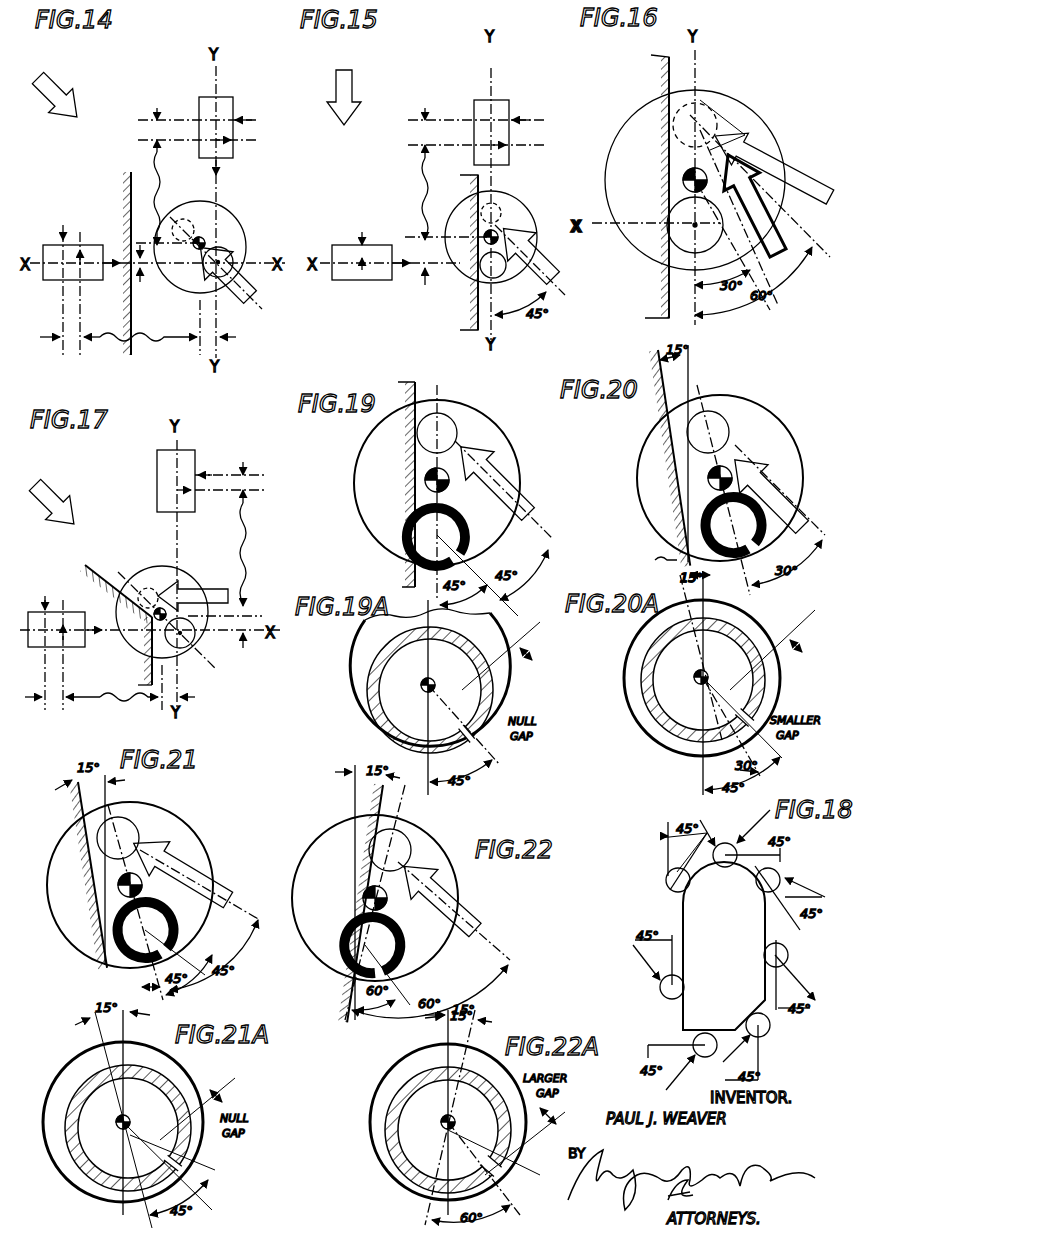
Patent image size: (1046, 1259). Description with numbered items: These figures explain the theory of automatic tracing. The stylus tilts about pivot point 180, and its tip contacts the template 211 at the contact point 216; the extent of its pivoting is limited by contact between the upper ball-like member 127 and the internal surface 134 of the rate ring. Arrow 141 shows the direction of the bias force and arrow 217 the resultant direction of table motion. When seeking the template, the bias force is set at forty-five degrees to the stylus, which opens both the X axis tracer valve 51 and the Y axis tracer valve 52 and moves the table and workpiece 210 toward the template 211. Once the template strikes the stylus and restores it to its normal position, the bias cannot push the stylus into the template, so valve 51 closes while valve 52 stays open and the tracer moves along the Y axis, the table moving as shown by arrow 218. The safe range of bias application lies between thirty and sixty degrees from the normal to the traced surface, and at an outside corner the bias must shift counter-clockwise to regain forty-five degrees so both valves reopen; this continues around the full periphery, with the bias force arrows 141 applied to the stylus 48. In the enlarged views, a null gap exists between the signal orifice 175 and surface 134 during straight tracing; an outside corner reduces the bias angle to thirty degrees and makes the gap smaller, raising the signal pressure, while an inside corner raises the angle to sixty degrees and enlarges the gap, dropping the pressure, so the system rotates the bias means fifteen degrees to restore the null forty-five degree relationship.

In FIG. 18, the stylus 48 is at (667, 879).
In FIG. 14, the X axis tracer valve 51 is at (56, 280).
In FIG. 15, the X axis tracer valve 51 is at (374, 282).
In FIG. 17, the X axis tracer valve 51 is at (56, 629).
In FIG. 14, the Y axis tracer valve 52 is at (233, 104).
In FIG. 15, the Y axis tracer valve 52 is at (509, 104).
In FIG. 14, the upper ball-like member 127 is at (231, 252).
In FIG. 14, the internal surface of the rate ring 134 is at (249, 229).
In FIG. 19, the internal surface of the rate ring 134 is at (506, 439).
In FIG. 19A, the internal surface of the rate ring 134 is at (498, 642).
In FIG. 14, the bias force arrow 141 is at (240, 305).
In FIG. 17, the bias force arrow 141 is at (222, 586).
In FIG. 19, the bias force arrow 141 is at (530, 512).
In FIG. 18, the bias force arrow 141 is at (666, 847).
In FIG. 19A, the signal orifice 175 is at (475, 746).
In FIG. 14, the pivot point 180 is at (205, 240).
In FIG. 17, the pivot point 180 is at (153, 616).
In FIG. 19, the pivot point 180 is at (425, 482).
In FIG. 19A, the pivot point 180 is at (428, 685).
In FIG. 18, the workpiece 210 is at (730, 961).
In FIG. 14, the template 211 is at (129, 343).
In FIG. 15, the template 211 is at (484, 181).
In FIG. 16, the template 211 is at (669, 307).
In FIG. 17, the template 211 is at (103, 572).
In FIG. 19, the template 211 is at (417, 390).
In FIG. 14, the contact point of the stylus with the template 216 is at (188, 228).
In FIG. 19, the contact point of the stylus with the template 216 is at (449, 418).
In FIG. 14, the table motion arrow 217 is at (62, 86).
In FIG. 15, the table motion arrow 218 is at (352, 80).